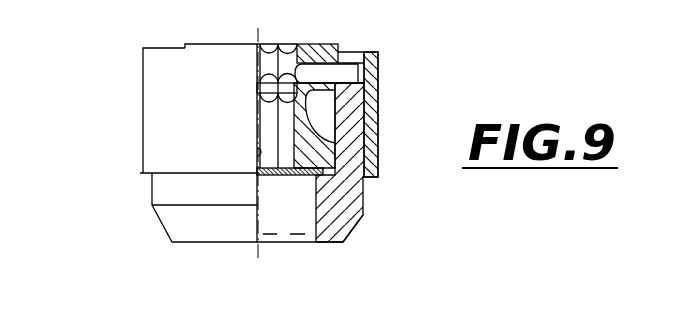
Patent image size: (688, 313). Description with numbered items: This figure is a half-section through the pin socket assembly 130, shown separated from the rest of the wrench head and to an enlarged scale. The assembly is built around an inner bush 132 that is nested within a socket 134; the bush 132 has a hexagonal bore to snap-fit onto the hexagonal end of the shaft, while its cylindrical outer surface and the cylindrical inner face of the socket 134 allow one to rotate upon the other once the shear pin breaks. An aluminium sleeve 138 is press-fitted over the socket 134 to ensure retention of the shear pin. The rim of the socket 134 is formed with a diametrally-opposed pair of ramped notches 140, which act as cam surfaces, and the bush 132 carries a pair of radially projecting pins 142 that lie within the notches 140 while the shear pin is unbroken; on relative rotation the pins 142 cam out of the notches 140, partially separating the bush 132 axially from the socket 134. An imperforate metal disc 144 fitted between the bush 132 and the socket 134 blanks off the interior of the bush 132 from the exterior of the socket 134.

The pin socket assembly 130 is at (127, 128).
The inner bush 132 is at (322, 44).
The socket 134 is at (341, 244).
The aluminium sleeve 138 is at (368, 122).
The ramped notches 140 is at (357, 52).
The radially projecting pins 142 is at (347, 72).
The imperforate metal disc 144 is at (295, 178).